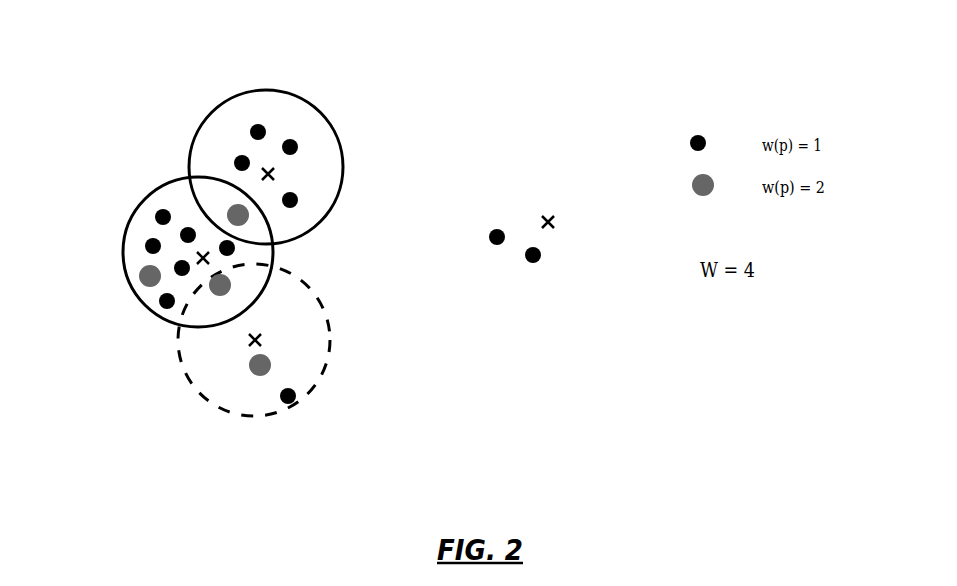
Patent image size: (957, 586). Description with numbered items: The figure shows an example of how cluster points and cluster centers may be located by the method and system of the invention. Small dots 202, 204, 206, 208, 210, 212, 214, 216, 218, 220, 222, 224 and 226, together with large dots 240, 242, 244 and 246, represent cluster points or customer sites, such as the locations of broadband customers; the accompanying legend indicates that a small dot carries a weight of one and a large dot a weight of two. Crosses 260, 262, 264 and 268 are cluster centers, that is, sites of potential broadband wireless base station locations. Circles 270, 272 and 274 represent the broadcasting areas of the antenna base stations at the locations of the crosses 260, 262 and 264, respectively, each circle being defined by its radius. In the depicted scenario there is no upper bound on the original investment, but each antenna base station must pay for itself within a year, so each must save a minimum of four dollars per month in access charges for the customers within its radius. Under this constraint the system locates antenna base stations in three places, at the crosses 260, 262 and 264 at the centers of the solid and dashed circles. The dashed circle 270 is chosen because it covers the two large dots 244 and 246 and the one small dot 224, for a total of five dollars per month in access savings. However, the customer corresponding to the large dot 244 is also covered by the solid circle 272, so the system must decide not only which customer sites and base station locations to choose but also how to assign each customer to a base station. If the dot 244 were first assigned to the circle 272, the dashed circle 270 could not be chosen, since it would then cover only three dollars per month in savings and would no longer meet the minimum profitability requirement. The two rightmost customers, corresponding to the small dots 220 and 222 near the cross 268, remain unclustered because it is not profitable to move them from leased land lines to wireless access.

The small dot 202 is at (261, 122).
The small dot 204 is at (294, 139).
The small dot 206 is at (298, 199).
The small dot 208 is at (240, 158).
The small dot 210 is at (160, 213).
The small dot 212 is at (147, 243).
The small dot 214 is at (233, 247).
The small dot 216 is at (177, 272).
The small dot 218 is at (165, 306).
The small dot 220 is at (498, 227).
The small dot 222 is at (542, 258).
The small dot 224 is at (297, 397).
The small dot 226 is at (187, 231).
The large dot 240 is at (232, 207).
The large dot 242 is at (141, 271).
The large dot 244 is at (232, 287).
The large dot 246 is at (273, 362).
The cross 260 is at (250, 343).
The cross 262 is at (200, 256).
The cross 264 is at (278, 173).
The cross 268 is at (555, 217).
The dashed circle 270 is at (245, 417).
The circle 272 is at (146, 206).
The circle 274 is at (260, 90).